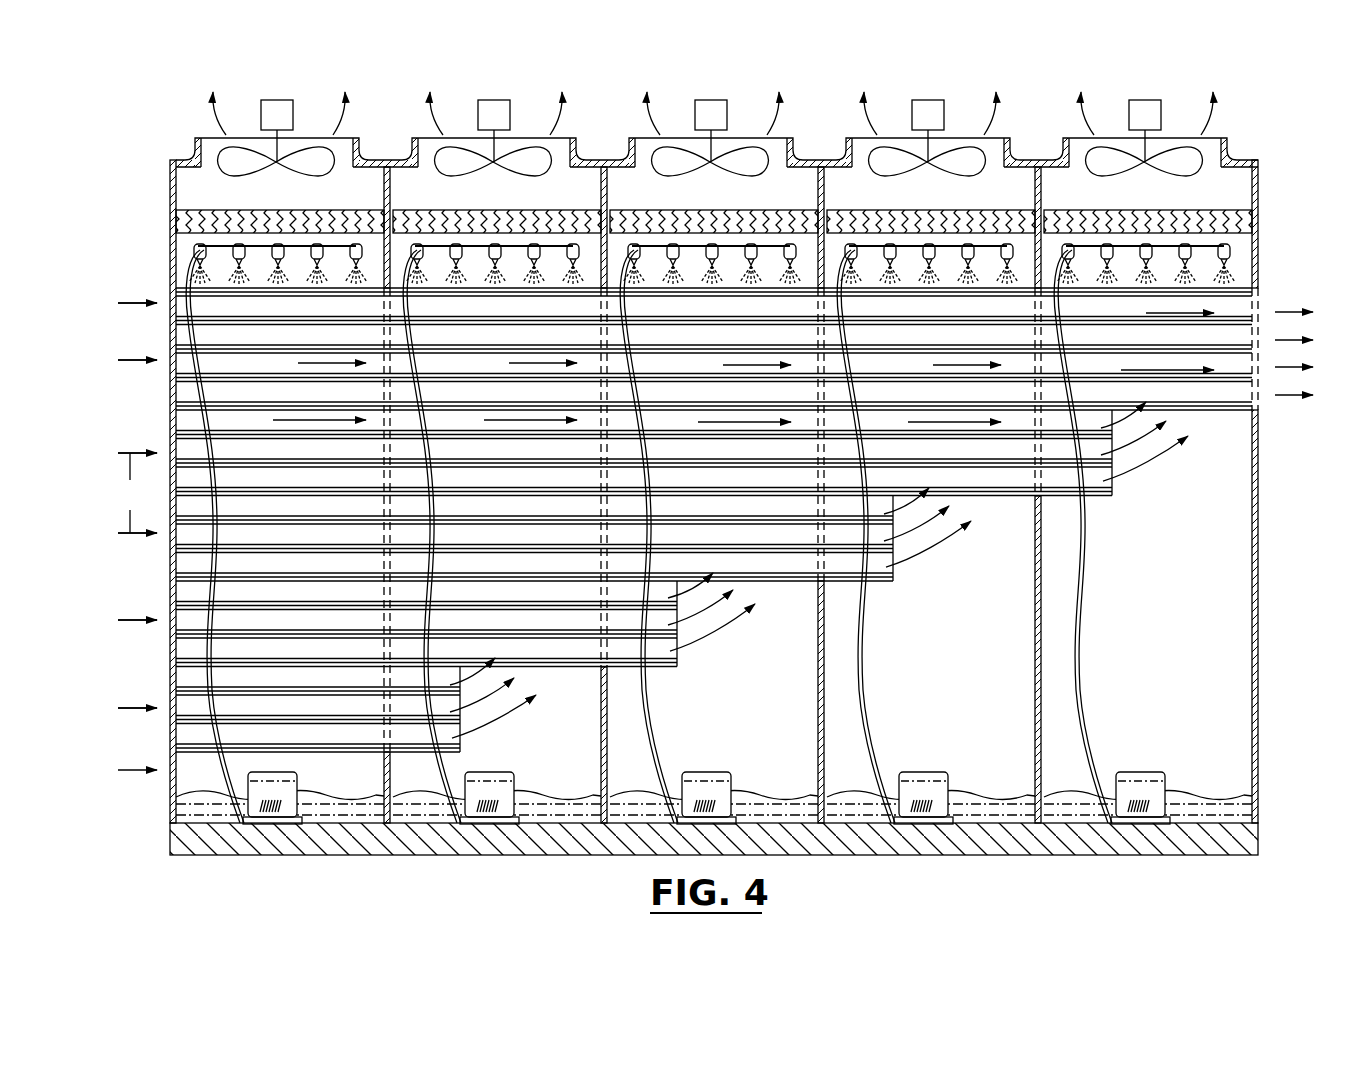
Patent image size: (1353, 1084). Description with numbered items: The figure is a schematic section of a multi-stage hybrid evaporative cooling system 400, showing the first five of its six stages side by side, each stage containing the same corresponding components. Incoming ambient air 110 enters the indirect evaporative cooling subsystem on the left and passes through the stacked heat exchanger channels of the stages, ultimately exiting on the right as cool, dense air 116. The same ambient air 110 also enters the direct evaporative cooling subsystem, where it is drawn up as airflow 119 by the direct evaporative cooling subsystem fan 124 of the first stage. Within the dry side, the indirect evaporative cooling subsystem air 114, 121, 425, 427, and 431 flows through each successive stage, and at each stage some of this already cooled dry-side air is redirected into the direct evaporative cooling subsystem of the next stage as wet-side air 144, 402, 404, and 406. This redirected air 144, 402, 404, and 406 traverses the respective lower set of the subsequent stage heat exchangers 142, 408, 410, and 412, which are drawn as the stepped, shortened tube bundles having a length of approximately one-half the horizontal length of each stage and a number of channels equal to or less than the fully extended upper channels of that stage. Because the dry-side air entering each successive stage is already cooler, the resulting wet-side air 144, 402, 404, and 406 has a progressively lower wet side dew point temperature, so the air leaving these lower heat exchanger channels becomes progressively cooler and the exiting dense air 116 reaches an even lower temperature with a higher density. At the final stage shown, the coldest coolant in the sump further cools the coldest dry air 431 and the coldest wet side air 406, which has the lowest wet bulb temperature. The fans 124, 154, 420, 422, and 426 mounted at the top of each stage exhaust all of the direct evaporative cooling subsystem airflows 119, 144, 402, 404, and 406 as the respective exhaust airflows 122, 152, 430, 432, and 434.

The multi-stage hybrid evaporative cooling system 400 is at (158, 160).
The incoming ambient air 110 is at (136, 536).
The cool, dense air 116 is at (1300, 400).
The indirect evaporative cooling subsystem air 114 is at (332, 363).
The indirect evaporative cooling subsystem air 121 is at (543, 363).
The indirect evaporative cooling subsystem air 425 is at (757, 365).
The indirect evaporative cooling subsystem air 427 is at (967, 365).
The indirect evaporative cooling subsystem dry air 431 is at (1180, 313).
The airflow 119 is at (296, 741).
The exhaust airflow 122 is at (282, 98).
The direct evaporative cooling subsystem fan 124 is at (273, 110).
The exhaust airflow 152 is at (504, 103).
The fan 154 is at (490, 110).
The exhaust airflow 430 is at (715, 102).
The fan 420 is at (708, 110).
The exhaust airflow 432 is at (932, 103).
The fan 422 is at (925, 110).
The exhaust airflow 434 is at (1147, 106).
The fan 426 is at (1142, 110).
The lower set of subsequent stage heat exchanger 142 is at (442, 743).
The wet side air 144 is at (506, 698).
The lower set of subsequent stage heat exchanger 408 is at (651, 657).
The wet side air 402 is at (735, 628).
The lower set of subsequent stage heat exchanger 410 is at (870, 573).
The wet side air 404 is at (955, 545).
The lower set of subsequent stage heat exchanger 412 is at (1092, 490).
The wet side air 406 is at (1170, 462).